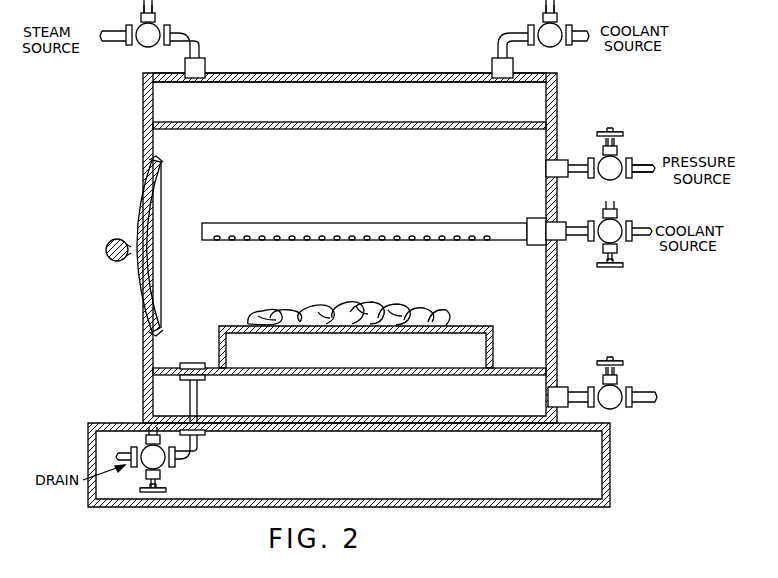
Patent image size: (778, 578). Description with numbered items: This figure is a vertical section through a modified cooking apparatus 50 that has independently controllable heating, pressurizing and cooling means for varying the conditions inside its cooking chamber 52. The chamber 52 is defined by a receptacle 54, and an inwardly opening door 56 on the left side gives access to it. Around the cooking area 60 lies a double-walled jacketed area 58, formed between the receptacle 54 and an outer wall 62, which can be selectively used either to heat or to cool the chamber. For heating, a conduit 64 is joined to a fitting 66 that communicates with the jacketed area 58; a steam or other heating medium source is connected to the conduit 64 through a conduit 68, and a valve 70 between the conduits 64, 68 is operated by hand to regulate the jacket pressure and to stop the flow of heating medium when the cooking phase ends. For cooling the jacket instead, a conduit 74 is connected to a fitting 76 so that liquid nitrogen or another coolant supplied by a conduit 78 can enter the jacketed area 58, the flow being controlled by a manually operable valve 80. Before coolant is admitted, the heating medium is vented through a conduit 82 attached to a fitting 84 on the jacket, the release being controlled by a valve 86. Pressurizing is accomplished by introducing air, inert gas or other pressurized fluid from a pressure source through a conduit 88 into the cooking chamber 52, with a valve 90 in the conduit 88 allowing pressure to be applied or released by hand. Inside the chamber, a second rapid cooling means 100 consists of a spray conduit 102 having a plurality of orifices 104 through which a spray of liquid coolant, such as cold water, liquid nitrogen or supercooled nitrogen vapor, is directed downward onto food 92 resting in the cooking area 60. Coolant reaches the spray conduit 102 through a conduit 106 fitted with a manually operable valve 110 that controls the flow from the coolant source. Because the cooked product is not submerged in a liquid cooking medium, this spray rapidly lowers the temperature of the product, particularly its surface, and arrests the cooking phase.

The cooking apparatus 50 is at (128, 207).
The cooking chamber 52 is at (403, 203).
The receptacle 54 is at (250, 122).
The door 56 is at (142, 310).
The jacketed area 58 is at (366, 92).
The cooking area 60 is at (466, 326).
The outer wall 62 is at (283, 73).
The conduit 64 is at (196, 40).
The fitting 66 is at (207, 70).
The conduit 68 is at (120, 30).
The valve 70 is at (158, 22).
The conduit 74 is at (505, 44).
The fitting 76 is at (496, 60).
The conduit 78 is at (577, 34).
The valve 80 is at (544, 24).
The conduit 82 is at (582, 390).
The fitting 84 is at (548, 394).
The valve 86 is at (616, 395).
The conduit 88 is at (633, 163).
The valve 90 is at (609, 180).
The food 92 is at (396, 306).
The second rapid cooling means 100 is at (270, 220).
The spray conduit 102 is at (297, 232).
The orifices 104 is at (240, 252).
The conduit 106 is at (580, 241).
The valve 110 is at (614, 228).